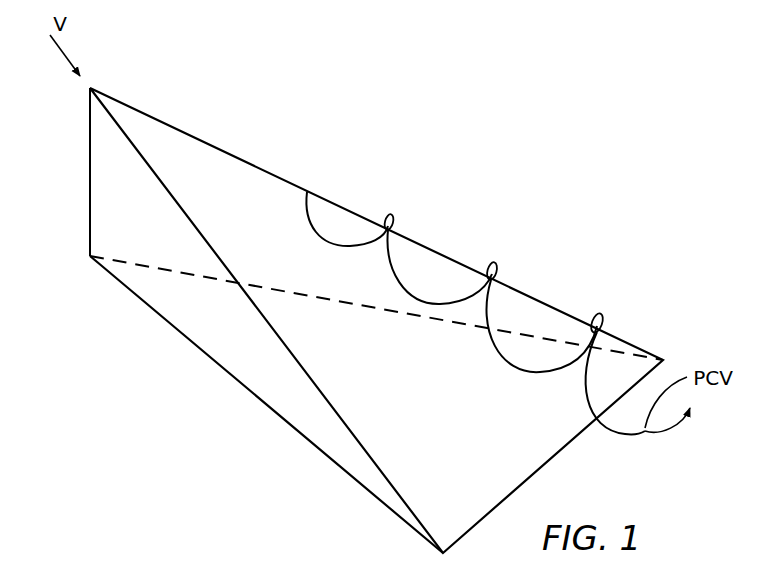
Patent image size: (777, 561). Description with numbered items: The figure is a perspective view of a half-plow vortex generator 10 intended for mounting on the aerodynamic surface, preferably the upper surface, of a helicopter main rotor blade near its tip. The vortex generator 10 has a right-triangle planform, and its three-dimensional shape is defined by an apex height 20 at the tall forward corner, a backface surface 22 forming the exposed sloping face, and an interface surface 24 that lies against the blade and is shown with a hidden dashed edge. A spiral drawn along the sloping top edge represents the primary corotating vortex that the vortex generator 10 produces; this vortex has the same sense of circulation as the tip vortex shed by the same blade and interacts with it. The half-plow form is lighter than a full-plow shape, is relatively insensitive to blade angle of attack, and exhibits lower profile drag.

The half-plow vortex generator 10 is at (325, 184).
The apex height 20 is at (38, 88).
The backface surface 22 is at (406, 428).
The interface surface 24 is at (292, 388).